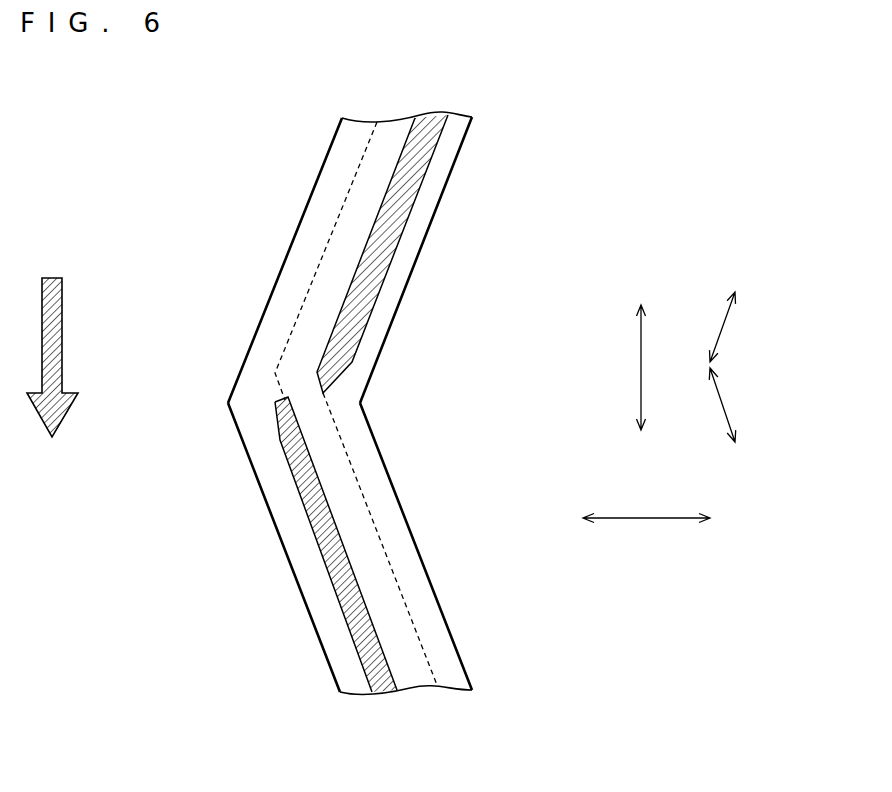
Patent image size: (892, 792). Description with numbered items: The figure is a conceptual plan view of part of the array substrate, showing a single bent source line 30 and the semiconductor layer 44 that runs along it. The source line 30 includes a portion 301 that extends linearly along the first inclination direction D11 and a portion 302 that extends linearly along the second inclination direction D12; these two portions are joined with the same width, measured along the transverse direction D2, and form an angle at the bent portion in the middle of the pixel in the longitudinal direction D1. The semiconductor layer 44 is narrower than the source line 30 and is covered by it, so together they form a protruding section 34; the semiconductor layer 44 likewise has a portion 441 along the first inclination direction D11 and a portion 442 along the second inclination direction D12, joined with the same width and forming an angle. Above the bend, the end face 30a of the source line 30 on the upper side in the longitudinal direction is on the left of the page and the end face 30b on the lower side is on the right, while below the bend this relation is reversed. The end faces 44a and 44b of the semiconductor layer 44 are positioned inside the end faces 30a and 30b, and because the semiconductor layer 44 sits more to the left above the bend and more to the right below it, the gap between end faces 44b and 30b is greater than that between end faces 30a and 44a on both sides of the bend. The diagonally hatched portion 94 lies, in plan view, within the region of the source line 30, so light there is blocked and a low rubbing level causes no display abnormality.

The source line 30 is at (376, 403).
The portion 301 is at (358, 380).
The portion 302 is at (358, 425).
The end face 30a is at (328, 150).
The end face 30b is at (462, 150).
The protruding section 34 is at (447, 213).
The semiconductor layer 44 is at (205, 371).
The portion 441 is at (292, 352).
The portion 442 is at (308, 398).
The end face 44a is at (306, 292).
The end face 44b is at (333, 373).
The portion 94 is at (430, 115).
The longitudinal direction D1 is at (623, 367).
The first inclination direction D11 is at (701, 327).
The second inclination direction D12 is at (701, 405).
The transverse direction D2 is at (646, 498).